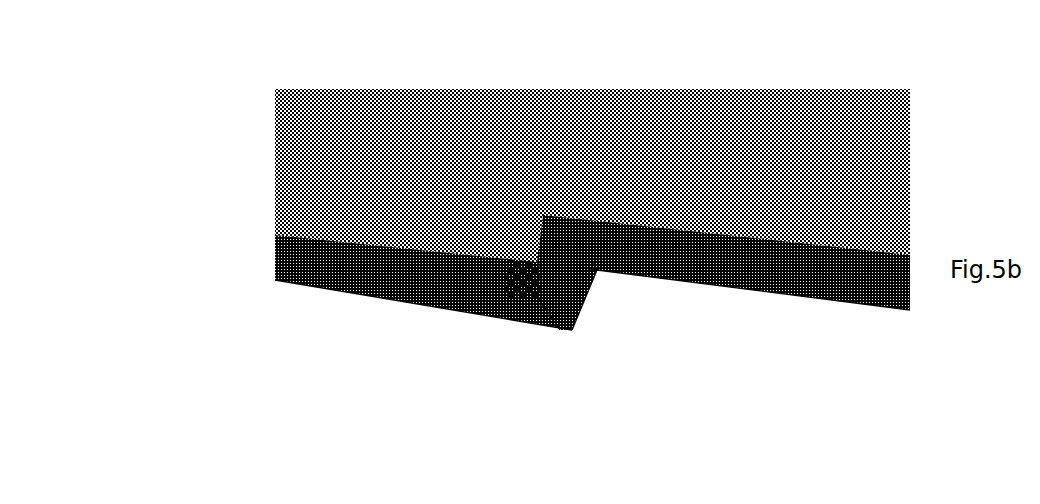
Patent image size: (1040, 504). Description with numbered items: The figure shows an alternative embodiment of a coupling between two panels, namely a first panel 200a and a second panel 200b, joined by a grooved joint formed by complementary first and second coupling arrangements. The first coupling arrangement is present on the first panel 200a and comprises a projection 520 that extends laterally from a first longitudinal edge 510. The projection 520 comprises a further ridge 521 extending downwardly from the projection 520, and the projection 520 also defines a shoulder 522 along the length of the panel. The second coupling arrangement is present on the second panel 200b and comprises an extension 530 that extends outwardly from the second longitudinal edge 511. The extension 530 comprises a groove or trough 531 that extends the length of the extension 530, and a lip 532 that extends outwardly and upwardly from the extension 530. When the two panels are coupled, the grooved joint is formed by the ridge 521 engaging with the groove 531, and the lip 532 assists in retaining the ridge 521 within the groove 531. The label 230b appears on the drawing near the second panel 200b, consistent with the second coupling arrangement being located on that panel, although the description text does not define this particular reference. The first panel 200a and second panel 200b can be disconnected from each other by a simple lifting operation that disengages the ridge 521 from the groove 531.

The second substrate region 230b is at (141, 112).
The second longitudinal edge 511 is at (524, 225).
The first longitudinal edge 510 is at (540, 222).
The projection 520 is at (585, 212).
The ridge 521 is at (586, 271).
The shoulder 522 is at (643, 280).
The extension 530 is at (503, 317).
The groove 531 is at (538, 300).
The lip 532 is at (569, 300).
The first panel 200a is at (863, 302).
The second panel 200b is at (355, 297).